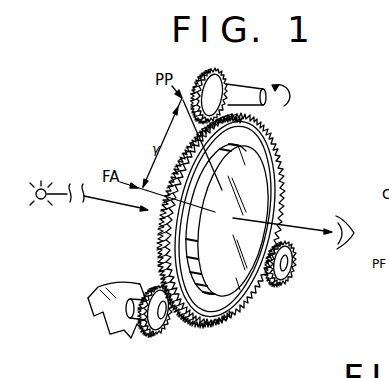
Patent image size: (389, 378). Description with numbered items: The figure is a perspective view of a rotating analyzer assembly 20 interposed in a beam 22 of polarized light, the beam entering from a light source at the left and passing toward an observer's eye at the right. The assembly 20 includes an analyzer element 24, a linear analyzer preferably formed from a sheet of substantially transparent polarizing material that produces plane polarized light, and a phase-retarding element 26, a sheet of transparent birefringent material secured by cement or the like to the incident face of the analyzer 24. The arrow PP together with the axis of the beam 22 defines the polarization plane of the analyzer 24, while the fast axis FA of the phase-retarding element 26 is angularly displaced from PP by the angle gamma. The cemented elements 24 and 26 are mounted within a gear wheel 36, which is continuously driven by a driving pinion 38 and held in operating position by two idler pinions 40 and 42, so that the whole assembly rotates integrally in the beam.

The rotating analyzer assembly 20 is at (284, 135).
The beam of polarized light 22 is at (120, 209).
The analyzer element 24 is at (257, 208).
The phase-retarding element 26 is at (224, 297).
The gear wheel 36 is at (196, 328).
The driving pinion 38 is at (228, 82).
The idler pinion 40 is at (296, 270).
The idler pinion 42 is at (148, 337).